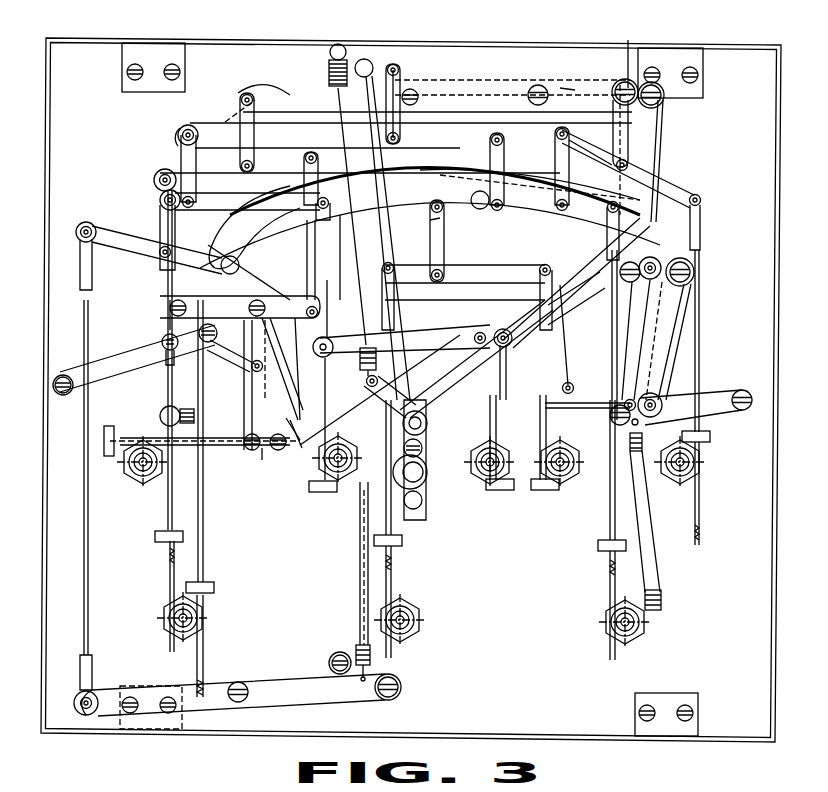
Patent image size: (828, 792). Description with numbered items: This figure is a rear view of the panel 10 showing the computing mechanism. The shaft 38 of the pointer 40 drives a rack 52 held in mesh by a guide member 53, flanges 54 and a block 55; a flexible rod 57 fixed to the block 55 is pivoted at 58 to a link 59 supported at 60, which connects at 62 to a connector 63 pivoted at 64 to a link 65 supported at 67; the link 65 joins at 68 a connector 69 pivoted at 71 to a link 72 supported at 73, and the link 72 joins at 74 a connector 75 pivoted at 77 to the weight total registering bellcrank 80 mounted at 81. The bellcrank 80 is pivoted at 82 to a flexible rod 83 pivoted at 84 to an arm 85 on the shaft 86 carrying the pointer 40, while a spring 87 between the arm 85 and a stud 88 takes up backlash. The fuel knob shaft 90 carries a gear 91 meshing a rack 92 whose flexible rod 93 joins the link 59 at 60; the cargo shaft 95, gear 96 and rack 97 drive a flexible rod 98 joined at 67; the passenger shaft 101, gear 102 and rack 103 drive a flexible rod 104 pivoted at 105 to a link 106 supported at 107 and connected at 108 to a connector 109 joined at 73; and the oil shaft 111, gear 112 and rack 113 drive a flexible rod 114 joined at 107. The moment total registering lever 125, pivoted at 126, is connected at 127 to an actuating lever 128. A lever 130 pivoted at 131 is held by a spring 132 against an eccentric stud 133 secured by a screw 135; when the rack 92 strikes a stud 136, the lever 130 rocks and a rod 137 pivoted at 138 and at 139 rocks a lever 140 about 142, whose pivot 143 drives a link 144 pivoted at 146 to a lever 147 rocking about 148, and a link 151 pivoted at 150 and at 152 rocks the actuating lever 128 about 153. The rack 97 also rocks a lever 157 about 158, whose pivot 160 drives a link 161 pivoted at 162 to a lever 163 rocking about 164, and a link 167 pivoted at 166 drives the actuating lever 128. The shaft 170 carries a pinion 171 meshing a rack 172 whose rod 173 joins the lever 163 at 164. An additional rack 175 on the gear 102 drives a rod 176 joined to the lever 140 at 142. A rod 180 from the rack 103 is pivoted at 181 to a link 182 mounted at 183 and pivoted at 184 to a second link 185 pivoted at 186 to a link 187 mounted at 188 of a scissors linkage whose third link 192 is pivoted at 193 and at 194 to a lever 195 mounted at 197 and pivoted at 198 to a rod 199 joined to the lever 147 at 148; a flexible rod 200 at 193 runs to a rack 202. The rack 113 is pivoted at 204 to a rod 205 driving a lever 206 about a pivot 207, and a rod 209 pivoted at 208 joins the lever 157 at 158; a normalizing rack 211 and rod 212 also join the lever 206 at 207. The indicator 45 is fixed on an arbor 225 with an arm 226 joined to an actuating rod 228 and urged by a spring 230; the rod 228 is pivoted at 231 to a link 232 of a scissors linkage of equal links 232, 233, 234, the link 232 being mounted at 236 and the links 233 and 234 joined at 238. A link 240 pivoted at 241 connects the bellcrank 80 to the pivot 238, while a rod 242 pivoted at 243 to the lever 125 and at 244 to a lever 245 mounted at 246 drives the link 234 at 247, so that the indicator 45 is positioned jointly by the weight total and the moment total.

The machine frame 10 is at (230, 44).
The nut 38 is at (576, 456).
The link 40 is at (572, 276).
The rod 45 is at (404, 384).
The rod 52 is at (540, 394).
The nut 53 is at (506, 450).
The nut 54 is at (576, 466).
The bracket 55 is at (518, 492).
The pivot 57 is at (552, 376).
The link 58 is at (546, 270).
The bar 59 is at (503, 276).
The pivot link 60 is at (388, 262).
The pivot 62 is at (444, 270).
The link 63 is at (444, 238).
The arc plate 64 is at (432, 205).
The pivot 65 is at (452, 203).
The pivot link 67 is at (611, 200).
The pin 68 is at (480, 212).
The pivot 69 is at (498, 166).
The pivot 71 is at (504, 140).
The link 72 is at (499, 132).
The pivot disc 73 is at (180, 126).
The arc plate 74 is at (386, 150).
The link 75 is at (401, 137).
The pin 77 is at (397, 66).
The bar 80 is at (498, 80).
The screw 81 is at (660, 103).
The pin 82 is at (366, 58).
The rod 83 is at (384, 222).
The rod 84 is at (378, 422).
The spring 85 is at (366, 380).
The roller 86 is at (427, 423).
The spring 87 is at (329, 74).
The pin 88 is at (338, 44).
The nut 90 is at (420, 610).
The nut 91 is at (418, 630).
The threaded rod 92 is at (394, 566).
The rod 93 is at (394, 532).
The nut 95 is at (640, 632).
The nut 96 is at (632, 638).
The threaded rod 97 is at (608, 655).
The rod 98 is at (610, 528).
The nut 101 is at (205, 612).
The nut 102 is at (196, 626).
The threaded rod 103 is at (168, 566).
The rod 104 is at (166, 296).
The pivot 105 is at (160, 201).
The cam loop 106 is at (240, 227).
The pivot 107 is at (316, 206).
The pivot 108 is at (195, 204).
The link 109 is at (181, 140).
The nut 111 is at (354, 454).
The nut 112 is at (356, 462).
The arm 113 is at (293, 447).
The rod 114 is at (330, 246).
The pin 125 is at (573, 86).
The screw 126 is at (542, 84).
The screw 127 is at (418, 90).
The cam 128 is at (280, 92).
The lever 130 is at (320, 702).
The screw 131 is at (244, 684).
The rod 132 is at (358, 516).
The spring 133 is at (352, 648).
The pivot screw 135 is at (329, 663).
The pivot screw 136 is at (398, 696).
The rod 137 is at (90, 624).
The pivot 138 is at (92, 695).
The pivot 139 is at (86, 224).
The bar 140 is at (118, 250).
The roller 142 is at (249, 272).
The pivot 143 is at (163, 258).
The link 144 is at (160, 224).
The disc 146 is at (154, 180).
The pivot 147 is at (160, 173).
The link 148 is at (311, 150).
The bar 150 is at (270, 124).
The wire 151 is at (242, 138).
The link 152 is at (240, 99).
The screw 153 is at (616, 84).
The arc 157 is at (522, 220).
The roller 158 is at (478, 192).
The line 160 is at (552, 222).
The link 161 is at (556, 152).
The pivot 162 is at (556, 137).
The link 163 is at (698, 192).
The pivot 164 is at (703, 203).
The pivot 166 is at (554, 164).
The link 167 is at (613, 132).
The nut 170 is at (678, 480).
The bracket 171 is at (702, 460).
The threaded rod 172 is at (702, 498).
The rod 173 is at (700, 362).
The threaded rod 175 is at (205, 670).
The rod 176 is at (204, 520).
The pivot screw 180 is at (170, 375).
The bar 181 is at (135, 340).
The bar 182 is at (130, 362).
The pivot screw 183 is at (63, 389).
The screw 184 is at (210, 326).
The link 185 is at (222, 356).
The rod 186 is at (244, 392).
The rod 187 is at (255, 436).
The pin 188 is at (262, 462).
The arm 192 is at (299, 379).
The screw 193 is at (276, 452).
The bar 194 is at (254, 300).
The bar 195 is at (282, 300).
The rod end 197 is at (168, 318).
The screw 198 is at (266, 310).
The rod 199 is at (307, 232).
The screw 200 is at (248, 452).
The nut 202 is at (130, 466).
The pivot 204 is at (330, 340).
The arm 205 is at (280, 340).
The bar 206 is at (424, 336).
The rod 207 is at (510, 356).
The roller 208 is at (500, 328).
The pivot 209 is at (480, 330).
The rod 211 is at (490, 424).
The link 212 is at (468, 352).
The roller 225 is at (427, 466).
The screw 226 is at (422, 448).
The bar 228 is at (582, 404).
The spring 230 is at (165, 410).
The pivot 231 is at (660, 395).
The link 232 is at (640, 310).
The link 233 is at (652, 358).
The link 234 is at (690, 326).
The screw 236 is at (692, 270).
The roller 238 is at (690, 280).
The pivot 240 is at (656, 260).
The link 241 is at (620, 280).
The rod 242 is at (620, 332).
The wire 243 is at (628, 40).
The screw 244 is at (612, 424).
The bar 245 is at (726, 414).
The screw 246 is at (743, 392).
The spring 247 is at (644, 434).